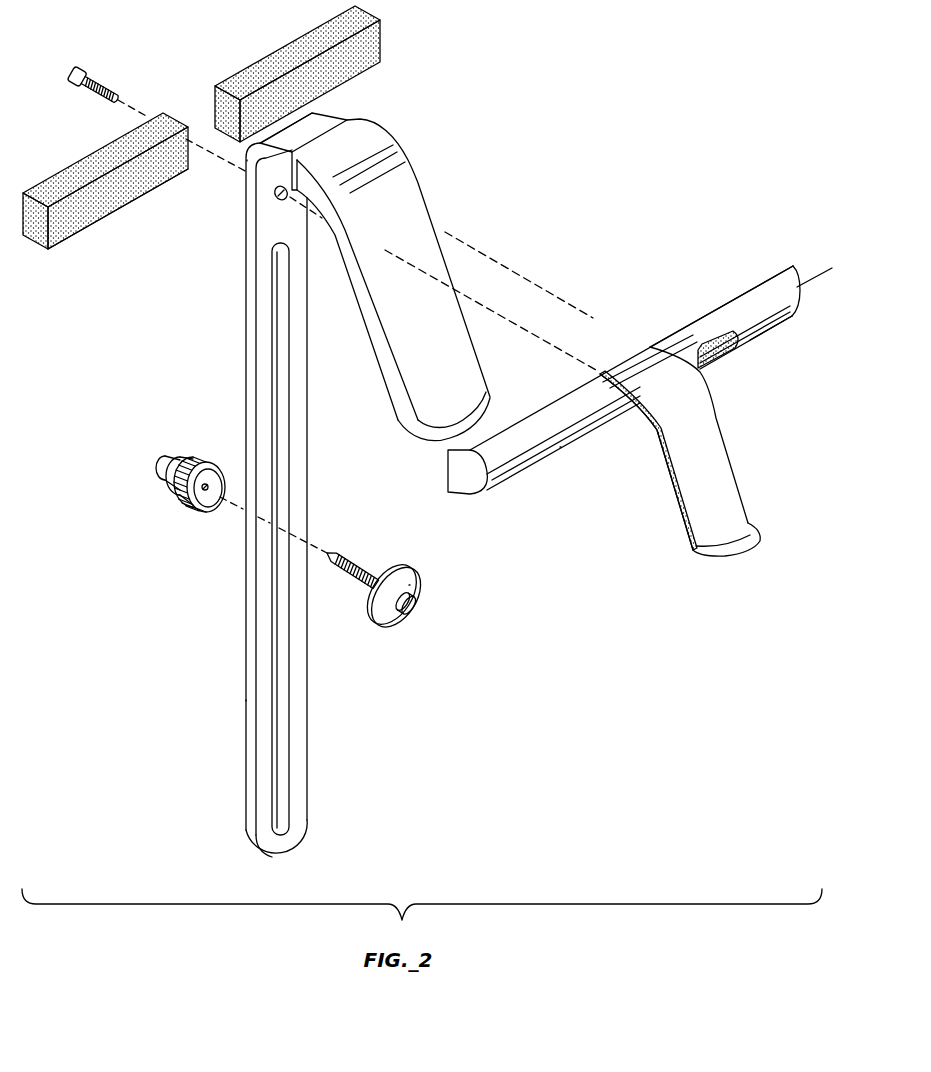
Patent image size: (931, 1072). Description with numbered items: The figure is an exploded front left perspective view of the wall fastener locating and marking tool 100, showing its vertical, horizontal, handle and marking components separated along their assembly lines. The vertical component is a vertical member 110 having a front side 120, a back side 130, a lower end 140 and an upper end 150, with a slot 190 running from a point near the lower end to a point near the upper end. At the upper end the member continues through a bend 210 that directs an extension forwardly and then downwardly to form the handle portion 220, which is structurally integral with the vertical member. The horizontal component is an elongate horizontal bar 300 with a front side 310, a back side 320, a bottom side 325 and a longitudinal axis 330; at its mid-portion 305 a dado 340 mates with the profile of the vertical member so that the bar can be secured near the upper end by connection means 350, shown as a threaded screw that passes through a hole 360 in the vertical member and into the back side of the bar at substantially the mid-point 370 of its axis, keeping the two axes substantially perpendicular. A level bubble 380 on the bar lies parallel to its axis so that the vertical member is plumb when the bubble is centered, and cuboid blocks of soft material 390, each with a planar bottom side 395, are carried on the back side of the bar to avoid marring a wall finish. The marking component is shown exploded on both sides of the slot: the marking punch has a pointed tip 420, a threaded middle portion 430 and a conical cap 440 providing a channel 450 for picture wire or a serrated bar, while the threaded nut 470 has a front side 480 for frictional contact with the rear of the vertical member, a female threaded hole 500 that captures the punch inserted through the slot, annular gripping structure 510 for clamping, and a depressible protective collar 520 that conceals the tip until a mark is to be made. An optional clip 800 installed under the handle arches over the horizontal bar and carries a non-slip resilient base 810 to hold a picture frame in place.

The wall fastener locating and marking tool 100 is at (420, 80).
The vertical member 110 is at (248, 366).
The front side 120 is at (300, 413).
The back side 130 is at (229, 679).
The lower end 140 is at (240, 851).
The upper end 150 is at (224, 181).
The slot 190 is at (285, 766).
The bend 210 is at (313, 125).
The handle portion 220 is at (403, 194).
The horizontal bar 300 is at (490, 495).
The mid-portion 305 is at (564, 438).
The front side 310 is at (752, 342).
The back side 320 is at (708, 299).
The bottom side 325 is at (545, 460).
The longitudinal axis 330 is at (405, 513).
The dado 340 is at (593, 347).
The connection means 350 is at (96, 78).
The hole 360 is at (279, 204).
The mid-point 370 is at (543, 344).
The level bubble 380 is at (713, 362).
The soft material blocks 390 is at (327, 28).
The bottom side 395 is at (82, 244).
The pointed tip 420 is at (328, 552).
The threaded middle portion 430 is at (365, 563).
The conical cap 440 is at (417, 606).
The channel 450 is at (409, 585).
The threaded nut 470 is at (166, 480).
The front side 480 is at (198, 523).
The female threaded hole 500 is at (210, 497).
The annular gripping structure 510 is at (206, 450).
The protective collar 520 is at (160, 466).
The clip 800 is at (707, 461).
The non-slip resilient base 810 is at (679, 503).